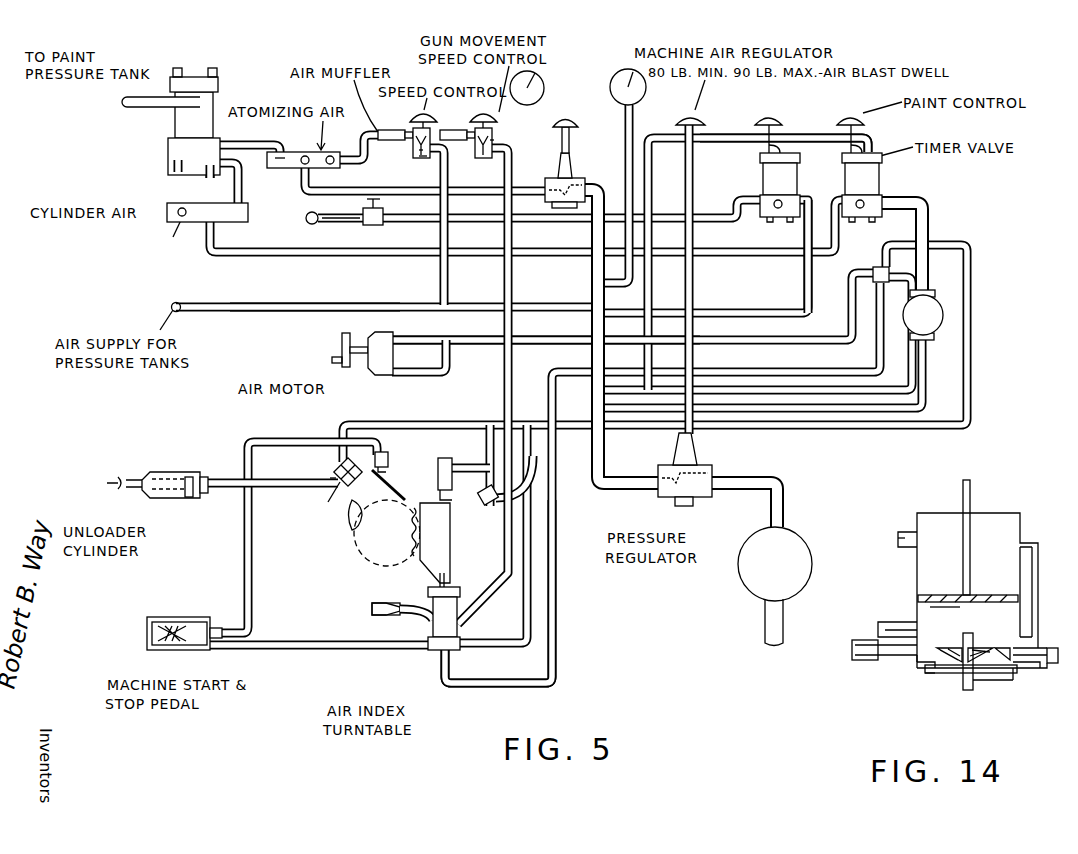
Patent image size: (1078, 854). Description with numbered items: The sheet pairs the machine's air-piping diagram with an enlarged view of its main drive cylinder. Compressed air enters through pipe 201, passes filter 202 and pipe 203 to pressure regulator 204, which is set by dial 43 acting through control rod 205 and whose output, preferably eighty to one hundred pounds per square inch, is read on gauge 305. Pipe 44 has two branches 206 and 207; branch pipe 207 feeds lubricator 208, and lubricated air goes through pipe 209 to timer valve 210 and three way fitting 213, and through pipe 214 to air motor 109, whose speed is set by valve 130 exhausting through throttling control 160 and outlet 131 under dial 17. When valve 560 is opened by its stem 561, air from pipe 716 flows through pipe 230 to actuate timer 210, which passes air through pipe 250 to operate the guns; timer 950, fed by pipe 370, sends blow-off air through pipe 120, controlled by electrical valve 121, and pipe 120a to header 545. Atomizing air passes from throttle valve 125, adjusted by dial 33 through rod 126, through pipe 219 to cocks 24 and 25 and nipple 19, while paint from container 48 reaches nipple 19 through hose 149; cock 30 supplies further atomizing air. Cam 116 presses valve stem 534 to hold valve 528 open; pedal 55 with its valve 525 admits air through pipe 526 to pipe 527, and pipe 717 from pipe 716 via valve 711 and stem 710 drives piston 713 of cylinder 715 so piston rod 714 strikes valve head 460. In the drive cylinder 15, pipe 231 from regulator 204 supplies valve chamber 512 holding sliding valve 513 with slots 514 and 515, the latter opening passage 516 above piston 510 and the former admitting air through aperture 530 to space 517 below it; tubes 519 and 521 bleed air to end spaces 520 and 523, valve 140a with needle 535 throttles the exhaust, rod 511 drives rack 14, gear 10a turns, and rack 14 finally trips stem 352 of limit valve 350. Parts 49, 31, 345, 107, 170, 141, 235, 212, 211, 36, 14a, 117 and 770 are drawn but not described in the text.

In FIG. 5, the container 48 is at (212, 100).
In FIG. 5, the handle rod 49 is at (148, 107).
In FIG. 5, the hose 149 is at (228, 117).
In FIG. 5, the cock 25 is at (307, 150).
In FIG. 5, the outlet 131 is at (362, 128).
In FIG. 5, the cock 30 is at (170, 166).
In FIG. 5, the connecting pipe 31 is at (210, 176).
In FIG. 5, the cock 24 is at (281, 167).
In FIG. 5, the pipe 219 is at (349, 184).
In FIG. 5, the nipple 19 is at (241, 222).
In FIG. 5, the header 545 is at (309, 224).
In FIG. 5, the pipe 250 is at (288, 256).
In FIG. 5, the pipe 44 is at (181, 307).
In FIG. 5, the air supply pipe 345 is at (236, 311).
In FIG. 5, the air motor fitting 107 is at (342, 358).
In FIG. 5, the pipe 170 is at (351, 338).
In FIG. 5, the air motor 109 is at (382, 375).
In FIG. 5, the pipe 141 is at (506, 374).
In FIG. 5, the branch pipe 206 is at (601, 363).
In FIG. 5, the control rod 205 is at (692, 302).
In FIG. 5, the pipe 370 is at (806, 274).
In FIG. 5, the pipe 214 is at (779, 339).
In FIG. 5, the pipe 230 is at (651, 187).
In FIG. 5, the dial 43 is at (694, 113).
In FIG. 5, the timer 950 is at (760, 176).
In FIG. 5, the pipe 235 is at (822, 147).
In FIG. 5, the valve handle 212 is at (853, 114).
In FIG. 5, the stem pipe 211 is at (857, 130).
In FIG. 5, the timer valve 210 is at (872, 188).
In FIG. 5, the pipe 209 is at (931, 223).
In FIG. 5, the three way fitting 213 is at (880, 267).
In FIG. 5, the lubricator 208 is at (942, 313).
In FIG. 5, the branch pipe 207 is at (920, 387).
In FIG. 5, the pipe 716 is at (968, 393).
In FIG. 5, the gauge 305 is at (641, 92).
In FIG. 5, the dial 33 is at (574, 119).
In FIG. 5, the rod 126 is at (572, 141).
In FIG. 5, the throttle valve 125 is at (574, 174).
In FIG. 5, the speed control valve 36 is at (495, 113).
In FIG. 5, the valve body 14a is at (497, 138).
In FIG. 5, the valve needle 535 is at (472, 150).
In FIG. 5, the dial 17 is at (412, 111).
In FIG. 5, the throttling control 160 is at (418, 153).
In FIG. 5, the valve 130 is at (422, 157).
In FIG. 5, the electrical valve 121 is at (383, 209).
In FIG. 5, the pipe 120a is at (334, 223).
In FIG. 5, the pipe 120 is at (453, 221).
In FIG. 5, the valve head 460 is at (118, 476).
In FIG. 5, the cylinder 715 is at (160, 470).
In FIG. 5, the piston 713 is at (192, 476).
In FIG. 5, the piston rod 714 is at (136, 487).
In FIG. 5, the pipe 717 is at (268, 488).
In FIG. 5, the pipe 527 is at (252, 556).
In FIG. 5, the valve 711 is at (318, 470).
In FIG. 5, the valve stem 710 is at (336, 466).
In FIG. 5, the cam 116 is at (366, 465).
In FIG. 5, the valve stem 534 is at (382, 471).
In FIG. 5, the valve 528 is at (334, 484).
In FIG. 5, the lever 117 is at (357, 529).
In FIG. 5, the gear 10a is at (390, 562).
In FIG. 5, the limit valve 350 is at (447, 458).
In FIG. 14, the limit valve 350 is at (1045, 663).
In FIG. 5, the stem 352 is at (457, 492).
In FIG. 5, the valve 560 is at (513, 479).
In FIG. 5, the valve stem 561 is at (482, 500).
In FIG. 5, the rack 14 is at (447, 538).
In FIG. 5, the air cylinder 15 is at (461, 628).
In FIG. 14, the air cylinder 15 is at (1022, 531).
In FIG. 5, the pipe 231 is at (551, 634).
In FIG. 14, the pipe 231 is at (985, 676).
In FIG. 5, the pipe 526 is at (305, 648).
In FIG. 5, the valve pedal 55 is at (181, 620).
In FIG. 14, the valve pedal 55 is at (884, 660).
In FIG. 5, the valve 525 is at (218, 628).
In FIG. 5, the pressure regulator 204 is at (703, 473).
In FIG. 5, the pipe 203 is at (781, 497).
In FIG. 5, the filter 202 is at (752, 575).
In FIG. 5, the pipe 201 is at (760, 629).
In FIG. 14, the rod 511 is at (972, 503).
In FIG. 14, the fitting 770 is at (892, 527).
In FIG. 14, the piston 510 is at (918, 594).
In FIG. 14, the throttling valve 140a is at (880, 621).
In FIG. 14, the passage 516 is at (1034, 612).
In FIG. 14, the space 517 is at (944, 614).
In FIG. 14, the aperture 530 is at (925, 650).
In FIG. 14, the slot 515 is at (983, 650).
In FIG. 14, the space 523 is at (1022, 648).
In FIG. 14, the space 520 is at (891, 676).
In FIG. 14, the valve chamber 512 is at (915, 662).
In FIG. 14, the slot 514 is at (952, 673).
In FIG. 14, the tube 519 is at (930, 680).
In FIG. 14, the tube 521 is at (1013, 681).
In FIG. 14, the sliding valve 513 is at (1020, 673).